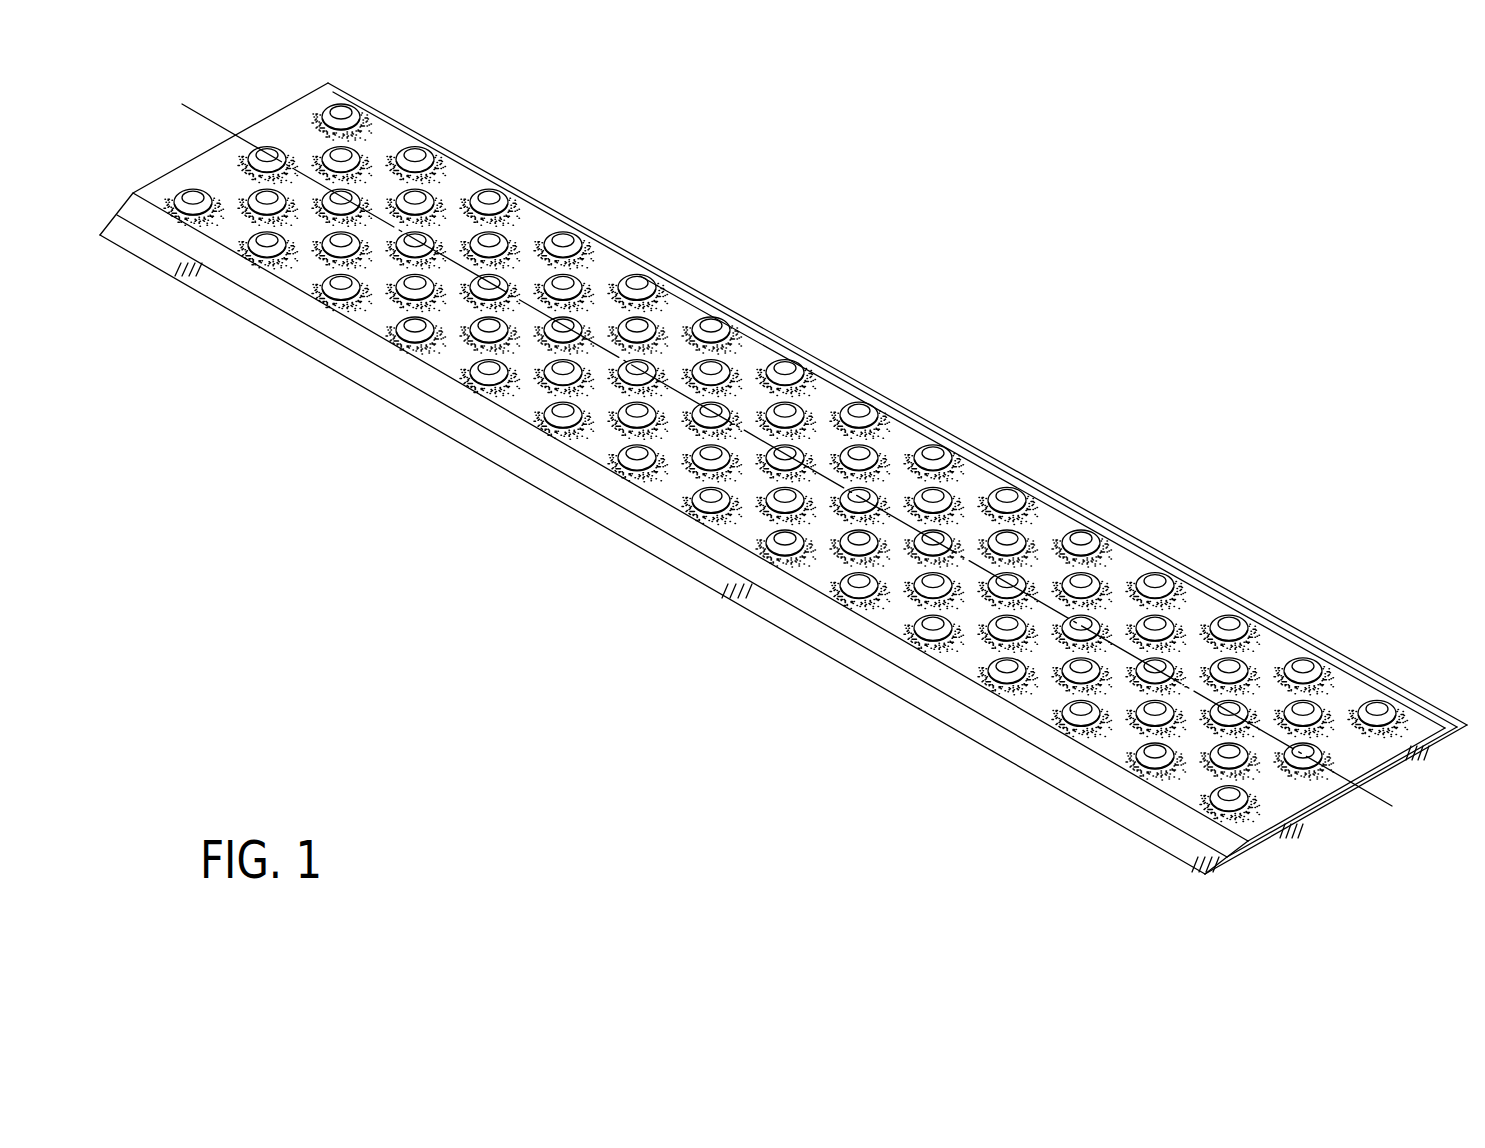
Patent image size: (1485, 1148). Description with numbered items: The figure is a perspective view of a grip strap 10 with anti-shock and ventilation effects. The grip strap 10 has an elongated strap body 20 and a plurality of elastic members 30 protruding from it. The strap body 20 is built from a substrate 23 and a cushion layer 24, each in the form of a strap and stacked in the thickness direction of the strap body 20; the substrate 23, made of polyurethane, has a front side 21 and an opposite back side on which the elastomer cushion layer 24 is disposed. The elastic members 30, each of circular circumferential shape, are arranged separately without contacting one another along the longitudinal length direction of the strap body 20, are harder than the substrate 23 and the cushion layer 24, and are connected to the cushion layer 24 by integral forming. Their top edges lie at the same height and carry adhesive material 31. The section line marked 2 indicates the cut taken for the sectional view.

The grip strap 10 is at (783, 506).
The strap body 20 is at (783, 506).
The front side 21 is at (918, 710).
The substrate 23 is at (1332, 806).
The cushion layer 24 is at (1263, 842).
The elastic members 30 is at (786, 463).
The adhesive material 31 is at (857, 410).
The section line 2- 2 is at (192, 113).